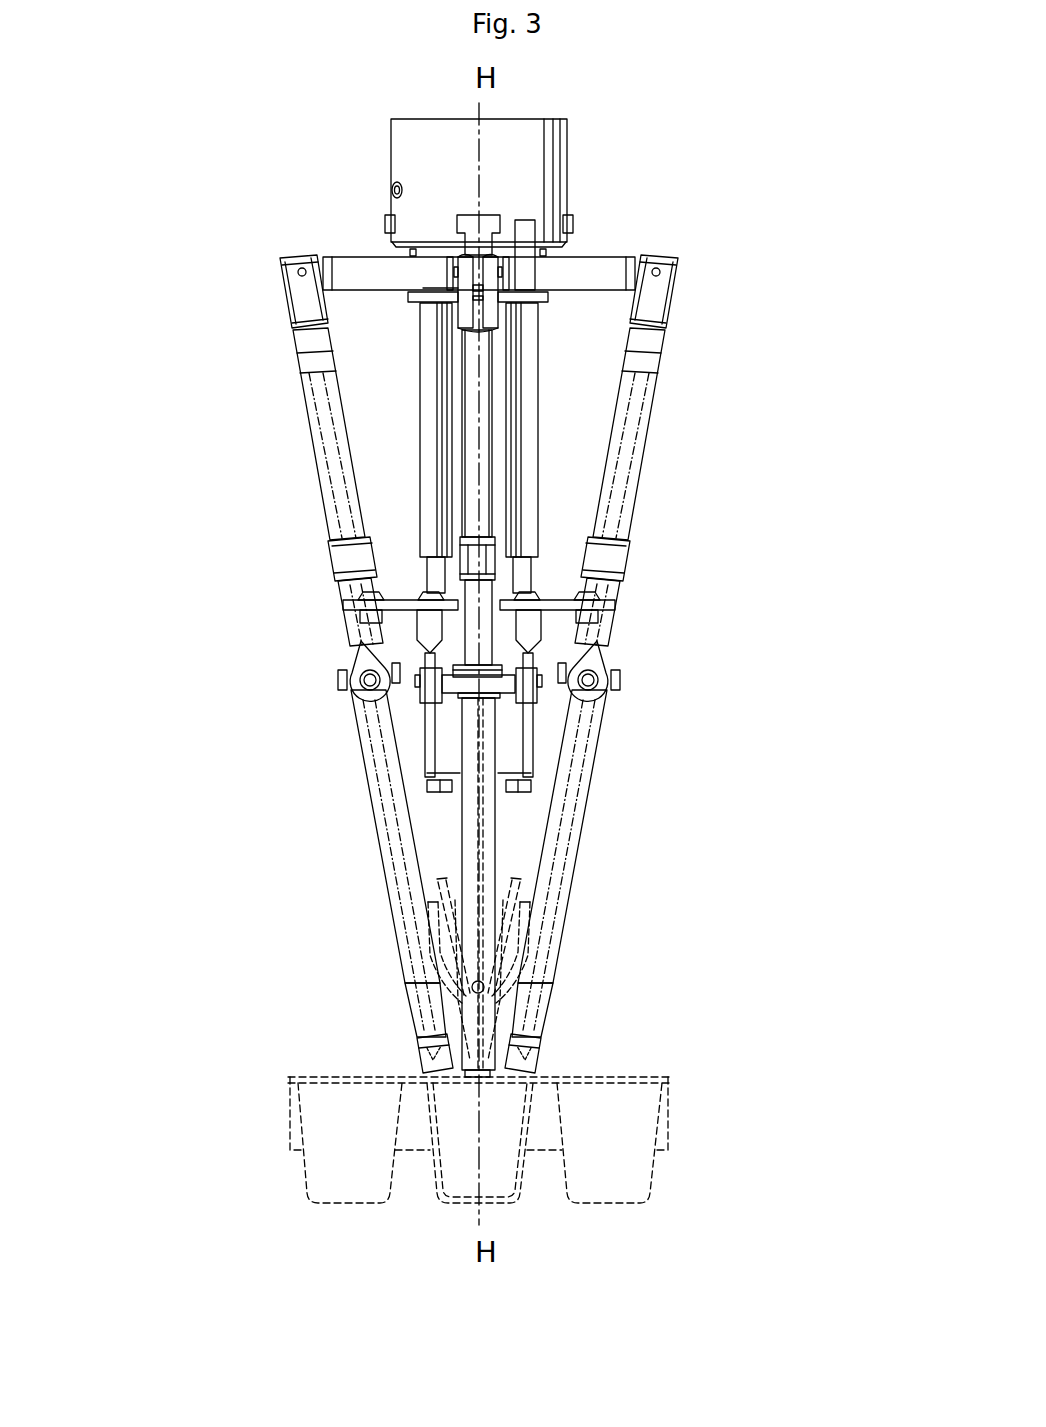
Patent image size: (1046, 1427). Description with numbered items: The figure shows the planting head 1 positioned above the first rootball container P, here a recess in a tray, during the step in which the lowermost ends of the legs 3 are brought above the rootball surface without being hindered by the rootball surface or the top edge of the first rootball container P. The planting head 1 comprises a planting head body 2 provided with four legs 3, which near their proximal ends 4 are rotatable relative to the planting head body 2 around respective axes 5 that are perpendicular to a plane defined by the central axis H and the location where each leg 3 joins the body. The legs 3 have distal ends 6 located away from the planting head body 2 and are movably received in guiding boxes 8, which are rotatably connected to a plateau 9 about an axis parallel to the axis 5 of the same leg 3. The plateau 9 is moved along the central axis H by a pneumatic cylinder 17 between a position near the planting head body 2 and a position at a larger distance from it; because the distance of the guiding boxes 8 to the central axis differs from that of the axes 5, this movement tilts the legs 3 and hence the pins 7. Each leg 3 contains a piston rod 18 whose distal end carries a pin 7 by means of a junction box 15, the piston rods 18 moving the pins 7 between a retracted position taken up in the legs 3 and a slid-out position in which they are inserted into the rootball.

The planting head 1 is at (660, 533).
The planting head body 2 is at (525, 170).
The legs 3 is at (612, 828).
The proximal ends 4 is at (287, 262).
The axes 5 is at (455, 265).
The distal ends 6 is at (540, 1060).
The pins 7 is at (545, 945).
The guiding boxes 8 is at (442, 680).
The plateau 9 is at (390, 605).
The junction box 15 is at (593, 637).
The pneumatic cylinder 17 is at (430, 485).
The piston rods 18 is at (607, 588).
The first rootball container P is at (687, 1167).